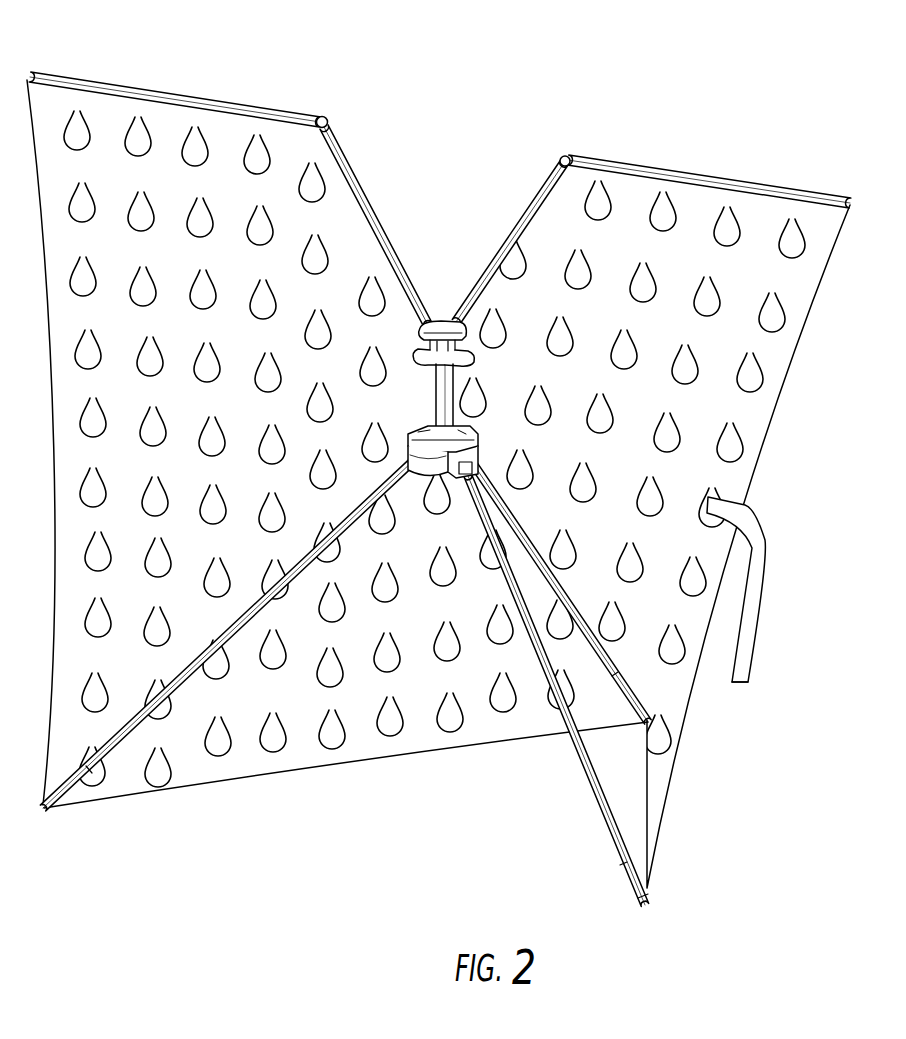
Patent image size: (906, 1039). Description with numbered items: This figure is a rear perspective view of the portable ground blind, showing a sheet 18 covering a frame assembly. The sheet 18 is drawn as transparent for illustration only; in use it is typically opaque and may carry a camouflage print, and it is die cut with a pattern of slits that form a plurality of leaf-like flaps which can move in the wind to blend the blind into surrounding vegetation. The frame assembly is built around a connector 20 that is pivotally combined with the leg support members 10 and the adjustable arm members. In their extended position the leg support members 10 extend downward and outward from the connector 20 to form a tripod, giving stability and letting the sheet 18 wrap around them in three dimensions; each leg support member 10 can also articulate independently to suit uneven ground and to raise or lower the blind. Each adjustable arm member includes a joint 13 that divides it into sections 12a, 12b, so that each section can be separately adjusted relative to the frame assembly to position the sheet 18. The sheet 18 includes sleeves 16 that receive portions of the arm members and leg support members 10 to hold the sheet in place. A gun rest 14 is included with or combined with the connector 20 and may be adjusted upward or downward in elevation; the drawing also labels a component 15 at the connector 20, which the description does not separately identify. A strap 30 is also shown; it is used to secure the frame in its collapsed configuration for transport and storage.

The leg support member 10 is at (592, 801).
The arm member section 12a is at (168, 96).
The arm member section 12b is at (368, 206).
The joint 13 is at (326, 118).
The gun rest 14 is at (446, 320).
The ring 15 is at (420, 340).
The sleeve 16 is at (648, 890).
The sheet 18 is at (192, 786).
The connector 20 is at (471, 357).
The strap 30 is at (748, 621).